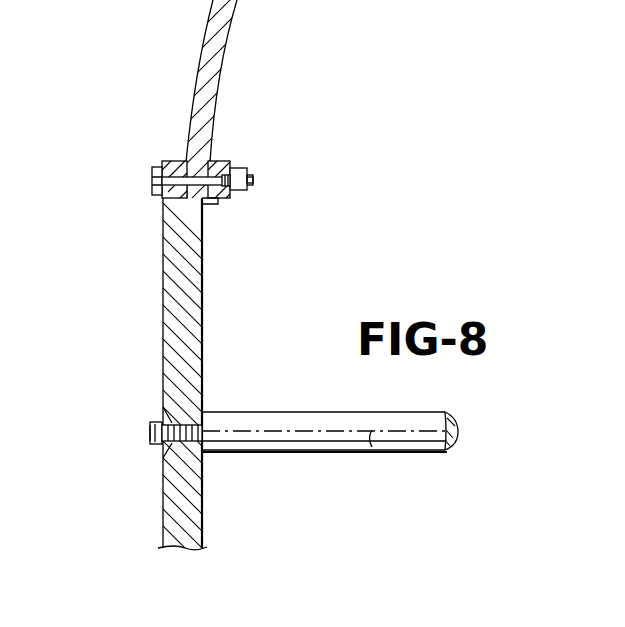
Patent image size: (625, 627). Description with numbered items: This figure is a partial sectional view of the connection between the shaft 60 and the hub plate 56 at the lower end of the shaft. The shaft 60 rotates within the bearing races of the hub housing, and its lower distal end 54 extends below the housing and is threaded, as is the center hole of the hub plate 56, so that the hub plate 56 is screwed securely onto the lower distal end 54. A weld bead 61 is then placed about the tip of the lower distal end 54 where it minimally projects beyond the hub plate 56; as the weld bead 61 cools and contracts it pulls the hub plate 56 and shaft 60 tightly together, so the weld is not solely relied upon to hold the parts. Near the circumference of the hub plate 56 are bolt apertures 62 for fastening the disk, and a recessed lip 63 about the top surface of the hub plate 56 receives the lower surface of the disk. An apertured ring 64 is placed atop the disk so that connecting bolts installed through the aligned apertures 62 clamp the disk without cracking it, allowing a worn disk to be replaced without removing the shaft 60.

The lower distal end 54 is at (152, 432).
The hub plate 56 is at (188, 278).
The shaft 60 is at (385, 452).
The weld bead 61 is at (160, 423).
The bolt apertures 62 is at (141, 174).
The recessed lip 63 is at (197, 215).
The apertured ring 64 is at (222, 162).